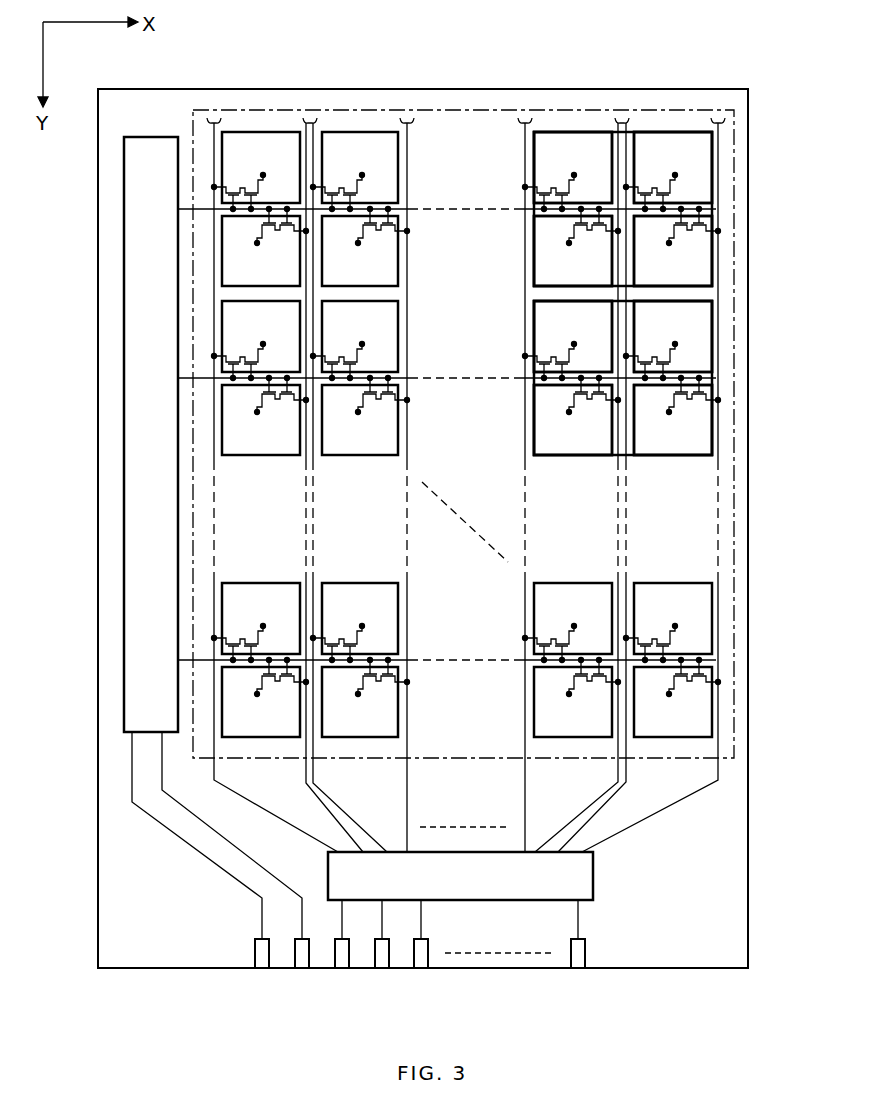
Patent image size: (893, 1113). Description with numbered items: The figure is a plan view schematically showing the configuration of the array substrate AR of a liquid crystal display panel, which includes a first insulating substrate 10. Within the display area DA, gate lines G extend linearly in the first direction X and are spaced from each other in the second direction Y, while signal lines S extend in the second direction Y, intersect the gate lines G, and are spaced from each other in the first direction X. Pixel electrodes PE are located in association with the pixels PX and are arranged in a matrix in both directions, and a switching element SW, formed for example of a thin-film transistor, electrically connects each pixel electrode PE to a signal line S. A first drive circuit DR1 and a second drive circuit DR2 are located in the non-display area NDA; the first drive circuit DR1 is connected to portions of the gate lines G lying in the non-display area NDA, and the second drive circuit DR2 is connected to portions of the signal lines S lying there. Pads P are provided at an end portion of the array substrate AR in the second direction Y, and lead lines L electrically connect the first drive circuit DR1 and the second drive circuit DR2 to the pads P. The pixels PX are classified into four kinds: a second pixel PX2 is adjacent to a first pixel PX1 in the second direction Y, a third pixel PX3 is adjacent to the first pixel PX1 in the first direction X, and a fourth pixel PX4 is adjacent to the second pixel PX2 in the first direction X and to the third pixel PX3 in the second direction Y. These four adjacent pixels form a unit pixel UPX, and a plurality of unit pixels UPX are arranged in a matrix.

The first insulating substrate 10 is at (748, 915).
The array substrate AR is at (720, 79).
The display area DA is at (440, 118).
The non-display area NDA is at (505, 97).
The first drive circuit DR1 is at (124, 176).
The second drive circuit DR2 is at (593, 874).
The lead lines L is at (257, 864).
The pads P is at (342, 975).
The signal lines S is at (214, 126).
The gate lines G is at (190, 209).
The pixels PX is at (509, 411).
The pixel electrodes PE is at (277, 133).
The switching element SW is at (239, 166).
The first pixel PX1 is at (601, 151).
The second pixel PX2 is at (601, 253).
The third pixel PX3 is at (699, 178).
The fourth pixel PX4 is at (699, 277).
The unit pixel UPX is at (815, 128).